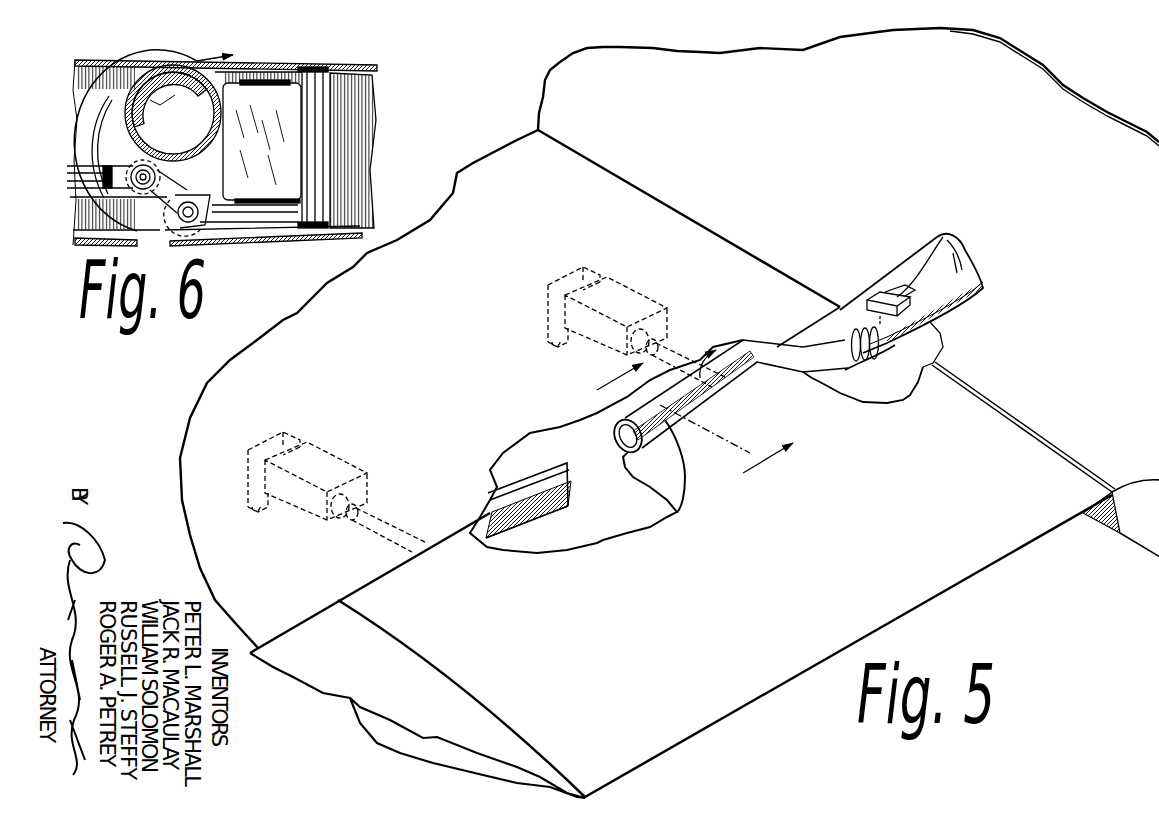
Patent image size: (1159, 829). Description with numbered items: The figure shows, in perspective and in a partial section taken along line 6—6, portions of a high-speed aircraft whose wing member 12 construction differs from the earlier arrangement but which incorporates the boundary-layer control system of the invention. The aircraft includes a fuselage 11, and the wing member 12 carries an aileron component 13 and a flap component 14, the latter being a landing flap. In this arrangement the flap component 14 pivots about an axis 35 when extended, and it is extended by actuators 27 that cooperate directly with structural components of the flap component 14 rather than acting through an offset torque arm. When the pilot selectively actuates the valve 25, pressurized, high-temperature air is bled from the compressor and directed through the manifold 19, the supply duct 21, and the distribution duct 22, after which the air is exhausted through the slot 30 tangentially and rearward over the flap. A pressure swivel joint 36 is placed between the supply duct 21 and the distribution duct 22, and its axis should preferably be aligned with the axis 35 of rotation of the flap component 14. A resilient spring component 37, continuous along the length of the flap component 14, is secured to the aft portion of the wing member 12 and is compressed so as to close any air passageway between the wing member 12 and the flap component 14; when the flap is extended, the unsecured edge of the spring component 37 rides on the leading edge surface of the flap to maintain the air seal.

In FIG. 5, the fuselage 11 is at (805, 202).
In FIG. 6, the wing member 12 is at (127, 57).
In FIG. 5, the wing member 12 is at (453, 366).
In FIG. 5, the aileron component 13 is at (430, 707).
In FIG. 6, the flap component 14 is at (310, 60).
In FIG. 5, the flap component 14 is at (738, 581).
In FIG. 5, the manifold 19 is at (933, 263).
In FIG. 5, the supply duct 21 is at (933, 363).
In FIG. 6, the distribution duct 22 is at (228, 131).
In FIG. 5, the distribution duct 22 is at (820, 340).
In FIG. 5, the valve 25 is at (893, 292).
In FIG. 5, the actuator 27 is at (333, 458).
In FIG. 5, the pressure swivel joint 36 is at (908, 400).
In FIG. 6, the slot 30 is at (145, 86).
In FIG. 6, the axis 35 is at (193, 204).
In FIG. 6, the resilient spring component 37 is at (92, 136).
In FIG. 5, the section line 6— 6 is at (679, 423).